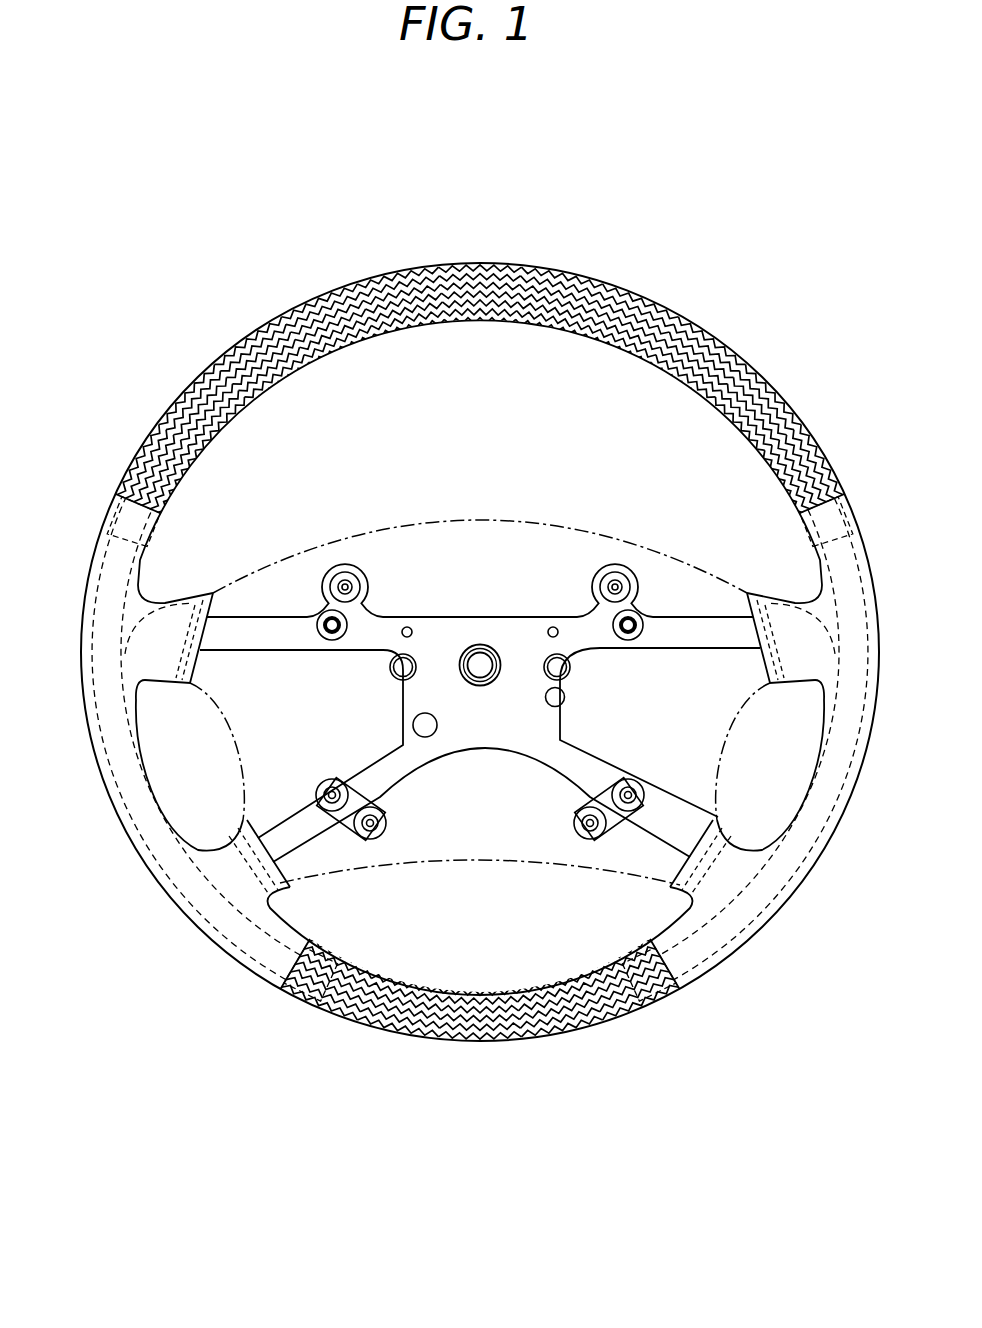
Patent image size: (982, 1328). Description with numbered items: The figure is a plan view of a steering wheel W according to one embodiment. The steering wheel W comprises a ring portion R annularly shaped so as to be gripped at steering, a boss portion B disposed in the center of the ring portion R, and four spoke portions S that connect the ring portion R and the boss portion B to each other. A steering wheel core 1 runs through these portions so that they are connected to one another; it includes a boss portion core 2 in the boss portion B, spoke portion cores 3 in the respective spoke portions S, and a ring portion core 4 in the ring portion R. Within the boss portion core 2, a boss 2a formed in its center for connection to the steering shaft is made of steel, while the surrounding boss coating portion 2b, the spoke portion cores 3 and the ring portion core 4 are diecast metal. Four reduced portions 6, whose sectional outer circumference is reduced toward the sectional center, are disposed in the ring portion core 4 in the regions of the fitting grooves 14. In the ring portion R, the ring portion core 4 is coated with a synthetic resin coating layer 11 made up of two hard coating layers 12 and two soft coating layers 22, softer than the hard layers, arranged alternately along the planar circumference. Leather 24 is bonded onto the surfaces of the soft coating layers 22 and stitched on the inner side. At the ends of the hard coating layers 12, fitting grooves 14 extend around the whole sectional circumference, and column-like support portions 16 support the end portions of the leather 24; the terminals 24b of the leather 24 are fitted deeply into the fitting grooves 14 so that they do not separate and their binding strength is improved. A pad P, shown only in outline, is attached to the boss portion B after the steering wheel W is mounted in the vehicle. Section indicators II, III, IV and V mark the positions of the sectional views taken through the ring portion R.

The steering wheel W is at (570, 183).
The ring portion R is at (436, 262).
The boss portion B is at (475, 555).
The spoke portions S is at (172, 578).
The pad P is at (415, 530).
The steering wheel core 1 is at (670, 433).
The boss portion core 2 is at (490, 473).
The boss 2a is at (503, 657).
The boss coating portion 2b is at (483, 642).
The spoke portion cores 3 is at (260, 606).
The ring portion core 4 is at (713, 413).
The reduced portions 6 is at (178, 505).
The coating layer 11 is at (663, 312).
The hard coating layers 12 is at (553, 1042).
The fitting grooves 14 is at (113, 493).
The support portions 16 is at (110, 497).
The soft coating layers 22 is at (172, 905).
The leather 24 is at (150, 858).
The terminals of the leather 24b is at (688, 1000).
The section line II is at (248, 945).
The section line III is at (62, 801).
The section line IV is at (187, 378).
The section line V is at (270, 1030).